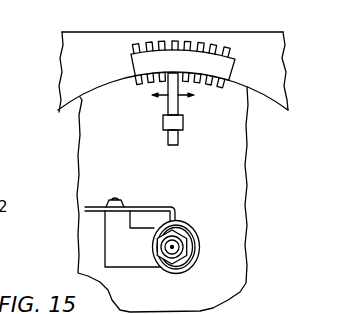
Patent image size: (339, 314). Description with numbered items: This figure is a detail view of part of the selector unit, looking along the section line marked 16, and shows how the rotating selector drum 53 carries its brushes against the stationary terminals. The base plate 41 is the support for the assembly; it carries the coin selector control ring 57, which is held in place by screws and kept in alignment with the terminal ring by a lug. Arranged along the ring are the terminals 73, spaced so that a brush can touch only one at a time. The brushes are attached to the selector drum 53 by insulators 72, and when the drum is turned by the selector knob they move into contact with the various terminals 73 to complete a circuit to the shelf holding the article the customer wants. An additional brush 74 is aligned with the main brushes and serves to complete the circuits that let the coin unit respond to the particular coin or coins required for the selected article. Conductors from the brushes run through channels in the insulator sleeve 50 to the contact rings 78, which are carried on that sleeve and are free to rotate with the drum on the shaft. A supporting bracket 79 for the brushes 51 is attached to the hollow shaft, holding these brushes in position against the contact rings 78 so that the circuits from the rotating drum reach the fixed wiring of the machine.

The base plate 41 is at (72, 113).
The selector drum 53 is at (248, 158).
The coin selector control ring 57 is at (233, 68).
The terminals 73 is at (201, 40).
The brush 74 is at (179, 108).
The insulators 72 is at (184, 124).
The spacing dimension 16 is at (173, 95).
The brushes 51 is at (145, 206).
The supporting bracket 79 is at (105, 237).
The contact rings 78 is at (203, 243).
The insulator sleeve 50 is at (197, 262).